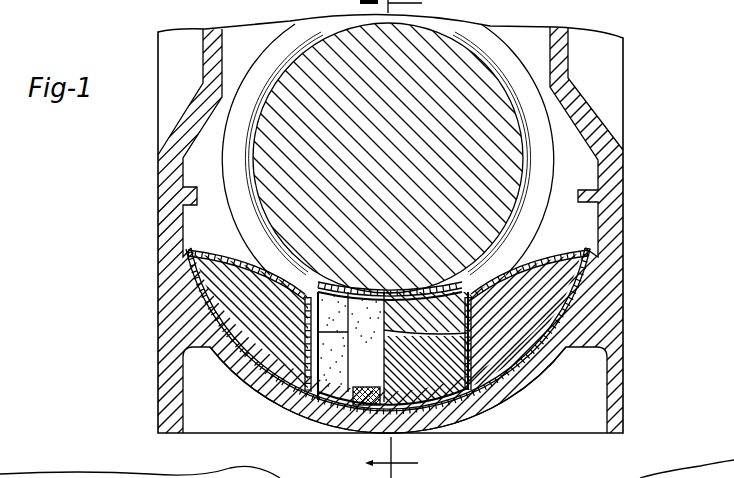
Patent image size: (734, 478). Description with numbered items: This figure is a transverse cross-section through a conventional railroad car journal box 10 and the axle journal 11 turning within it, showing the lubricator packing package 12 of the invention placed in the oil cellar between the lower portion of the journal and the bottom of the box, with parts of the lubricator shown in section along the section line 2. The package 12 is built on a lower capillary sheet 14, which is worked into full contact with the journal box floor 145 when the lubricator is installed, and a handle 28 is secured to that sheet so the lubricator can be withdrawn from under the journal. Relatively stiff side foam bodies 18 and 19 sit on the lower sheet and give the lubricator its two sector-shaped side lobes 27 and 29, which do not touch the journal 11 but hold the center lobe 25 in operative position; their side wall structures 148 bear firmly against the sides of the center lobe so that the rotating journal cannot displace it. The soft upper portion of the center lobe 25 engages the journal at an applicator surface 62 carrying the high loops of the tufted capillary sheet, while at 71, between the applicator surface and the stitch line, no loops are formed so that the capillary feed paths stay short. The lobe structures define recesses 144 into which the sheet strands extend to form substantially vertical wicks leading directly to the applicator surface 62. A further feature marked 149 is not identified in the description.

The section line 2- 2 is at (391, 239).
The journal box 10 is at (630, 164).
The axle journal 11 is at (462, 43).
The lubricator packing package 12 is at (200, 307).
The lower capillary sheet 14 is at (601, 271).
The side foam body 18 is at (217, 323).
The side foam body 19 is at (562, 298).
The center lobe 25 is at (315, 416).
The side lobe 27 is at (238, 362).
The handle 28 is at (357, 408).
The side lobe 29 is at (556, 362).
The applicator surface 62 is at (436, 272).
The loop-free region 71 is at (321, 407).
The recesses 144 is at (481, 402).
The journal box floor 145 is at (467, 422).
The side wall structures 148 is at (284, 368).
The housing band 149 is at (278, 400).